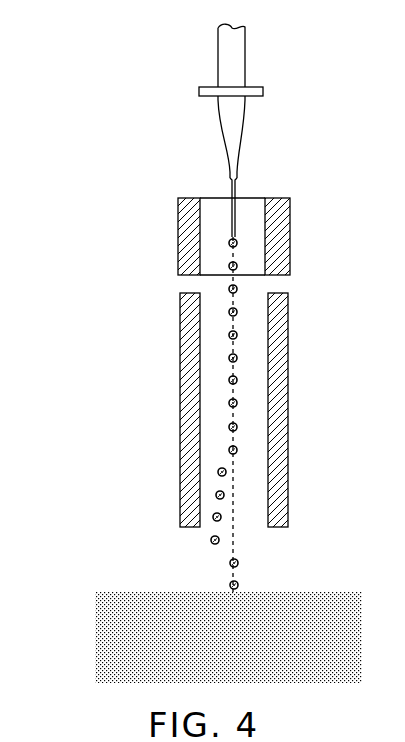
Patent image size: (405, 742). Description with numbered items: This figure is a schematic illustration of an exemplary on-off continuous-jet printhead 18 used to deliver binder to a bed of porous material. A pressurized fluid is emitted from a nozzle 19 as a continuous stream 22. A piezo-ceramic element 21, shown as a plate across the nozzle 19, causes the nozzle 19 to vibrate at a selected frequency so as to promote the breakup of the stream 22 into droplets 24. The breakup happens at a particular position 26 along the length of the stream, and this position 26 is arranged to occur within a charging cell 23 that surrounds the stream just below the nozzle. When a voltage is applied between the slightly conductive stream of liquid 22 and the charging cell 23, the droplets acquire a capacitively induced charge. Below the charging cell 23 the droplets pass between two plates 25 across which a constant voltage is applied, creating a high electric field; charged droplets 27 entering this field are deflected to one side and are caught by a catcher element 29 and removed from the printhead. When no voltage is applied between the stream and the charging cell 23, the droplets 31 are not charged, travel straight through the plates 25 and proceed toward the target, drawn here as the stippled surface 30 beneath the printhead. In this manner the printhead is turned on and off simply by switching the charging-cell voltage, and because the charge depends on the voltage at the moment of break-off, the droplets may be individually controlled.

The continuous-jet printhead 18 is at (153, 122).
The nozzle 19 is at (256, 62).
The piezo-ceramic element 21 is at (195, 93).
The continuous stream 22 is at (229, 190).
The charging cell 23 is at (293, 225).
The droplets 24 is at (224, 312).
The plates 25 is at (291, 391).
The breakup position 26 is at (221, 238).
The charged droplets 27 is at (212, 489).
The catcher element 29 is at (218, 548).
The substrate 30 is at (340, 585).
The uncharged droplets 31 is at (250, 568).